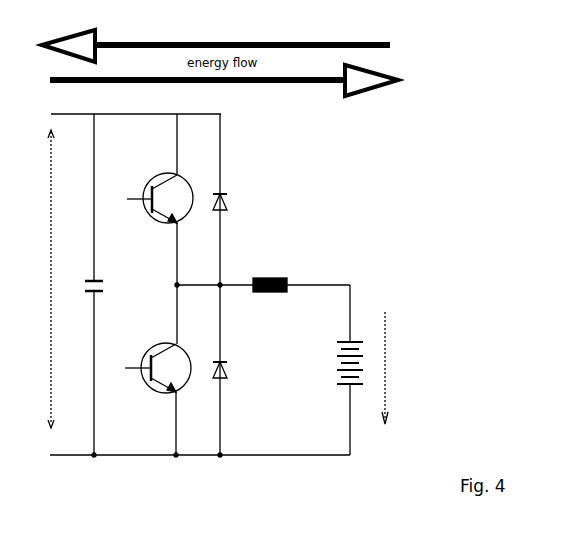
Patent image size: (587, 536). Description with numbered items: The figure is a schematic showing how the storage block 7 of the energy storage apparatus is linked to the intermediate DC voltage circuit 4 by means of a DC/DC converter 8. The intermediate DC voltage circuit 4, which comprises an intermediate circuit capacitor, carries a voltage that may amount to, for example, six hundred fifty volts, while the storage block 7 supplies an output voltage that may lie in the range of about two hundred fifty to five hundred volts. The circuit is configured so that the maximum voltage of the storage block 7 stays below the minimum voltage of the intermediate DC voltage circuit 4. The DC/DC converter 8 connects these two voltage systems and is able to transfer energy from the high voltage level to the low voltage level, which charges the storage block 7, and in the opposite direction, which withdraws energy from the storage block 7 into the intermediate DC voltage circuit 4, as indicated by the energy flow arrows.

The intermediate DC voltage circuit 4 is at (73, 460).
The storage block 7 is at (358, 330).
The DC/DC converter 8 is at (200, 440).